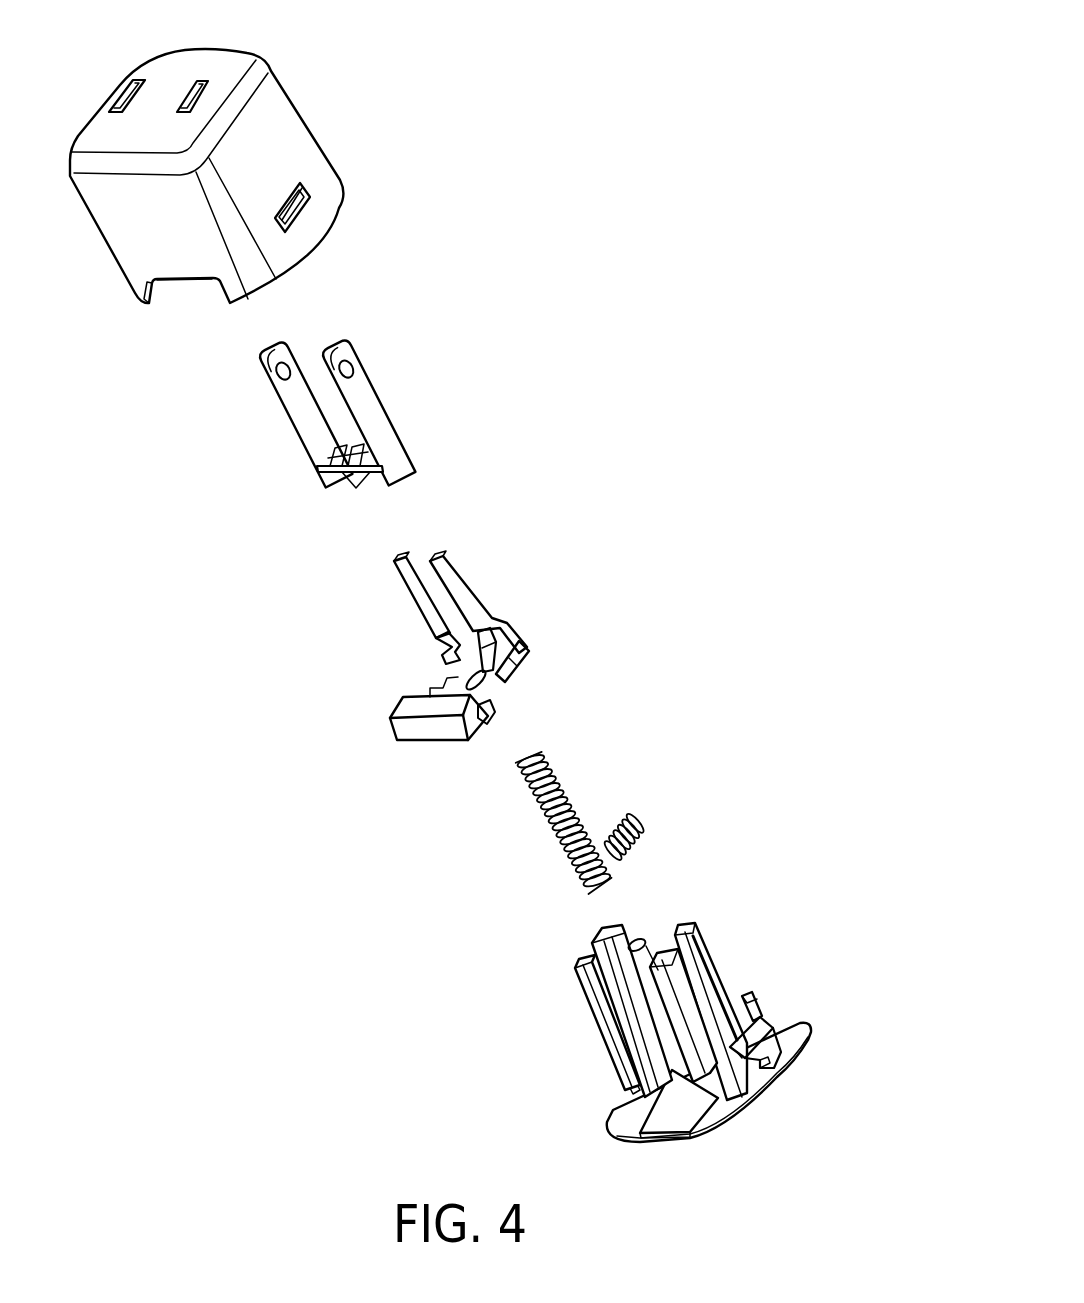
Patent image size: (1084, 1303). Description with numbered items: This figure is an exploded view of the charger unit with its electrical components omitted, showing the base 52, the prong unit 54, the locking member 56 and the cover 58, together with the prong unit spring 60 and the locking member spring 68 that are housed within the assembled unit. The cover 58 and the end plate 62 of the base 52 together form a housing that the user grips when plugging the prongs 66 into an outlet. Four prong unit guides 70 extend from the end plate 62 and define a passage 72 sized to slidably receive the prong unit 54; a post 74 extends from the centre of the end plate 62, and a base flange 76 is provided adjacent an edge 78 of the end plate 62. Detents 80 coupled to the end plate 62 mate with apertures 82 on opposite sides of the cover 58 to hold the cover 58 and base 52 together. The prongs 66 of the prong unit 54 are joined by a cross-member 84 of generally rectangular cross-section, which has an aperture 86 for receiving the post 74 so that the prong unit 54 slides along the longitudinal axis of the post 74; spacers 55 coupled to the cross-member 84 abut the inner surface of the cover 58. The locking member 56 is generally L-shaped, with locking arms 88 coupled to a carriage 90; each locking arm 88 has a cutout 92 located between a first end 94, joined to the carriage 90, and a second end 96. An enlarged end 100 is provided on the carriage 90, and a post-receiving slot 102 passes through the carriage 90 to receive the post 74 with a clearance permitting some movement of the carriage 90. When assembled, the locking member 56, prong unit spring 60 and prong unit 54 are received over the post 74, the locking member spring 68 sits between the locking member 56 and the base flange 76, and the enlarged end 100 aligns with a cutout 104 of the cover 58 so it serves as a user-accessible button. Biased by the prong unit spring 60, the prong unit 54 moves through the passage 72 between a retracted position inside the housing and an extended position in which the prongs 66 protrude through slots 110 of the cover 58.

The base 52 is at (729, 966).
The prong unit 54 is at (393, 398).
The spacers 55 is at (320, 473).
The locking member 56 is at (530, 609).
The cover 58 is at (273, 135).
The prong unit spring 60 is at (540, 818).
The end plate 62 is at (787, 1047).
The prongs 66 is at (347, 351).
The locking member spring 68 is at (627, 818).
The prong unit guides 70 is at (575, 966).
The passage 72 is at (648, 936).
The post 74 is at (657, 992).
The base flange 76 is at (752, 1005).
The edge 78 is at (790, 1017).
The detents 80 is at (755, 1070).
The apertures 82 is at (306, 201).
The cross-member 84 is at (357, 473).
The aperture 86 is at (330, 458).
The locking arms 88 is at (460, 567).
The carriage 90 is at (493, 693).
The cutout 92 is at (441, 645).
The first end 94 is at (517, 663).
The second end 96 is at (397, 558).
The enlarged end 100 is at (413, 708).
The post-receiving slot 102 is at (450, 678).
The cutout 104 is at (183, 282).
The slots 110 is at (188, 90).